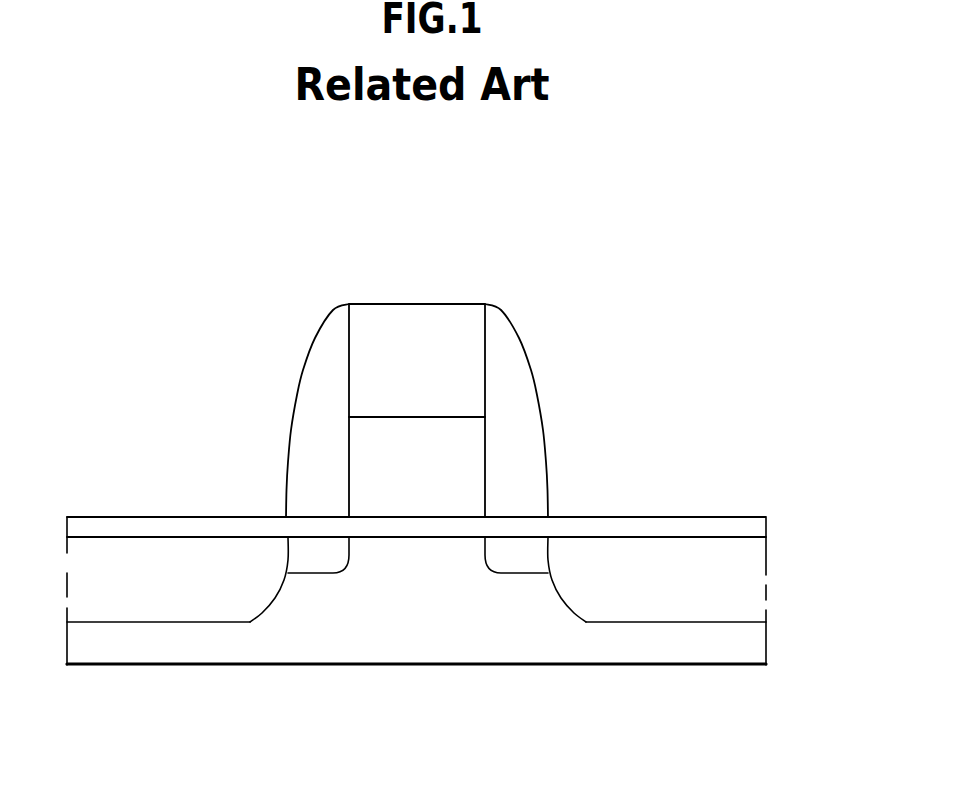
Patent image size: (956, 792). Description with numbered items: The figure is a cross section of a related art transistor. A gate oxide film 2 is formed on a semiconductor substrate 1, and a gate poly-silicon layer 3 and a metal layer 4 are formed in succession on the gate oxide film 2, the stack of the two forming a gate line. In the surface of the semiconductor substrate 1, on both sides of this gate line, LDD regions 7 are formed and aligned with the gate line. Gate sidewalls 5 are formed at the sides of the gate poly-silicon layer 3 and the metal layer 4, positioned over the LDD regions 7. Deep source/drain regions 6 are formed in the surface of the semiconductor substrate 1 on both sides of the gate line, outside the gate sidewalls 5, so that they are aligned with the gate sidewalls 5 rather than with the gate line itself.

The semiconductor substrate 1 is at (758, 647).
The gate oxide film 2 is at (758, 530).
The gate poly-silicon layer 3 is at (462, 463).
The metal layer 4 is at (462, 379).
The gate sidewalls 5 is at (320, 382).
The deep source/drain regions 6 is at (657, 607).
The LDD regions 7 is at (525, 563).